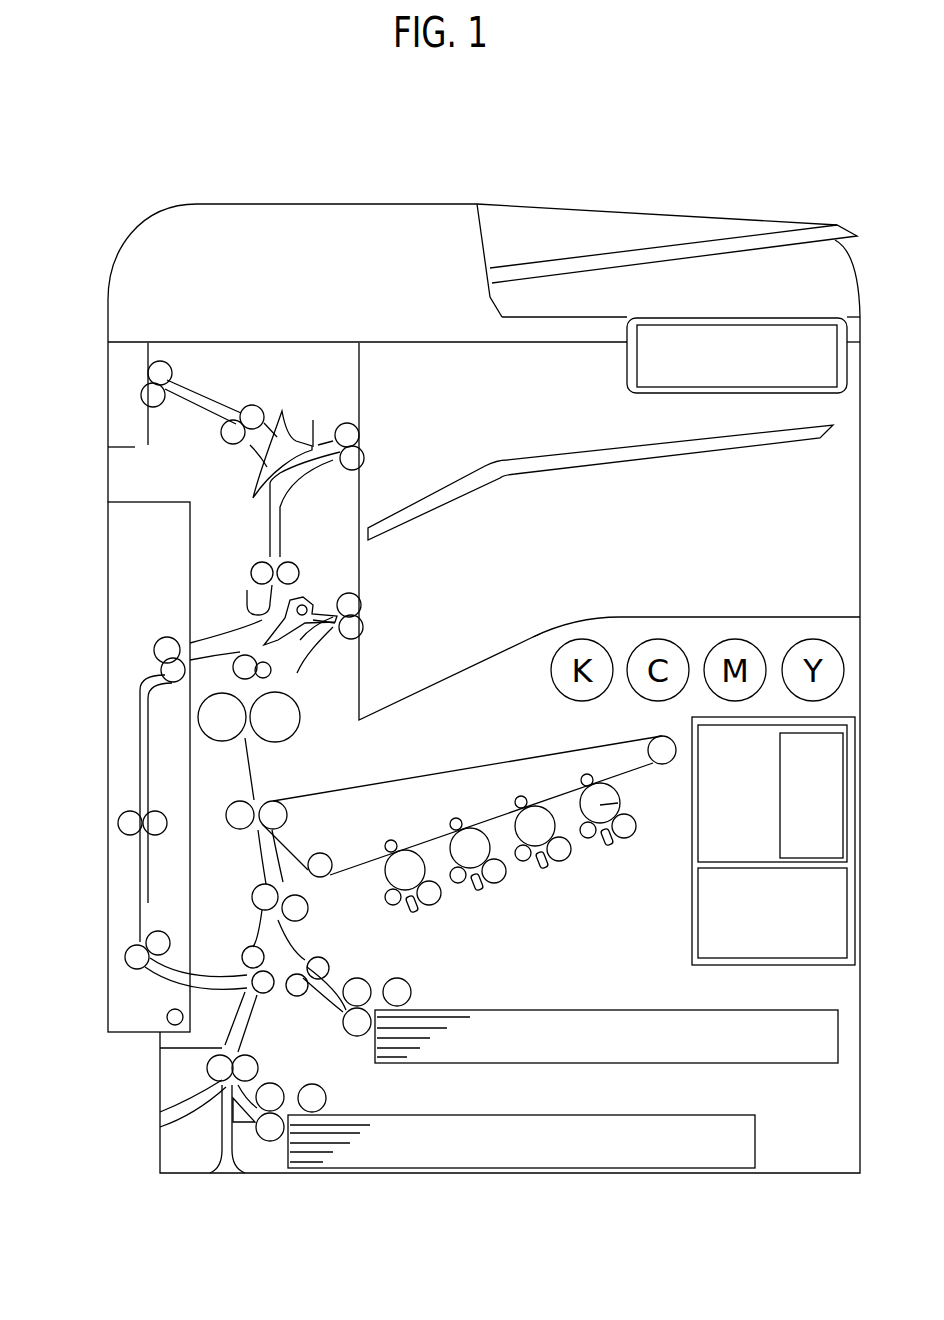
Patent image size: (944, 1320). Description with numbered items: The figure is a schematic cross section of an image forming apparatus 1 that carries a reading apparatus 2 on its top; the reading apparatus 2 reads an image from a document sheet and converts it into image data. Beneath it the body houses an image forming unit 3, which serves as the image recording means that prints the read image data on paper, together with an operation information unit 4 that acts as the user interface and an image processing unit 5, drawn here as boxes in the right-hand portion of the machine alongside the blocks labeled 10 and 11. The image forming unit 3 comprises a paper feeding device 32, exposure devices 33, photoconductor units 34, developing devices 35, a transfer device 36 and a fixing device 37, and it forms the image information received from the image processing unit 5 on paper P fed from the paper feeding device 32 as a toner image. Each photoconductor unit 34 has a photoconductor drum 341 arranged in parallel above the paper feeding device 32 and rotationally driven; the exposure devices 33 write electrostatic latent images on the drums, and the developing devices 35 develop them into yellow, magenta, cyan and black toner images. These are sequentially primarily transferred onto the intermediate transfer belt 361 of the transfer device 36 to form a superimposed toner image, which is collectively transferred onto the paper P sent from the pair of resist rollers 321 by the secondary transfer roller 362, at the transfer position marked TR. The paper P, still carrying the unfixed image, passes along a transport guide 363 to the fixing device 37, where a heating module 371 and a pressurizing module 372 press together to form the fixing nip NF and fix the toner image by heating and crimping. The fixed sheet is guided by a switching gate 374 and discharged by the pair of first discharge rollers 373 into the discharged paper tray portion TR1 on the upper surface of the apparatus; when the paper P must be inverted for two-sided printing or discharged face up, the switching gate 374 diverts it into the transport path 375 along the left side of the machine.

The image forming apparatus 1 is at (125, 205).
The reading apparatus 2 is at (321, 294).
The image forming unit 3 is at (556, 936).
The operation information unit 4 is at (745, 371).
The image processing unit 5 is at (784, 931).
The control device 10 is at (744, 762).
The storage unit 11 is at (827, 811).
The paper feeding device 32 is at (411, 975).
The exposure device 33 is at (609, 851).
The photoconductor unit 34 is at (578, 809).
The developing device 35 is at (636, 842).
The transfer device 36 is at (383, 766).
The fixing device 37 is at (312, 689).
The pair of resist rollers 321 is at (297, 908).
The photoconductor drum 341 is at (618, 803).
The intermediate transfer belt 361 is at (452, 768).
The secondary transfer roller 362 is at (252, 900).
The transport guide 363 is at (248, 767).
The heating module 371 is at (283, 742).
The pressurizing module 372 is at (222, 742).
The pair of first discharge rollers 373 is at (367, 622).
The switching gate 374 is at (312, 611).
The transport path 375 is at (263, 533).
The fixing nip NF is at (247, 697).
The secondary transfer nip TR is at (260, 829).
The discharged paper tray portion TR1 is at (537, 636).
The paper P is at (563, 1089).